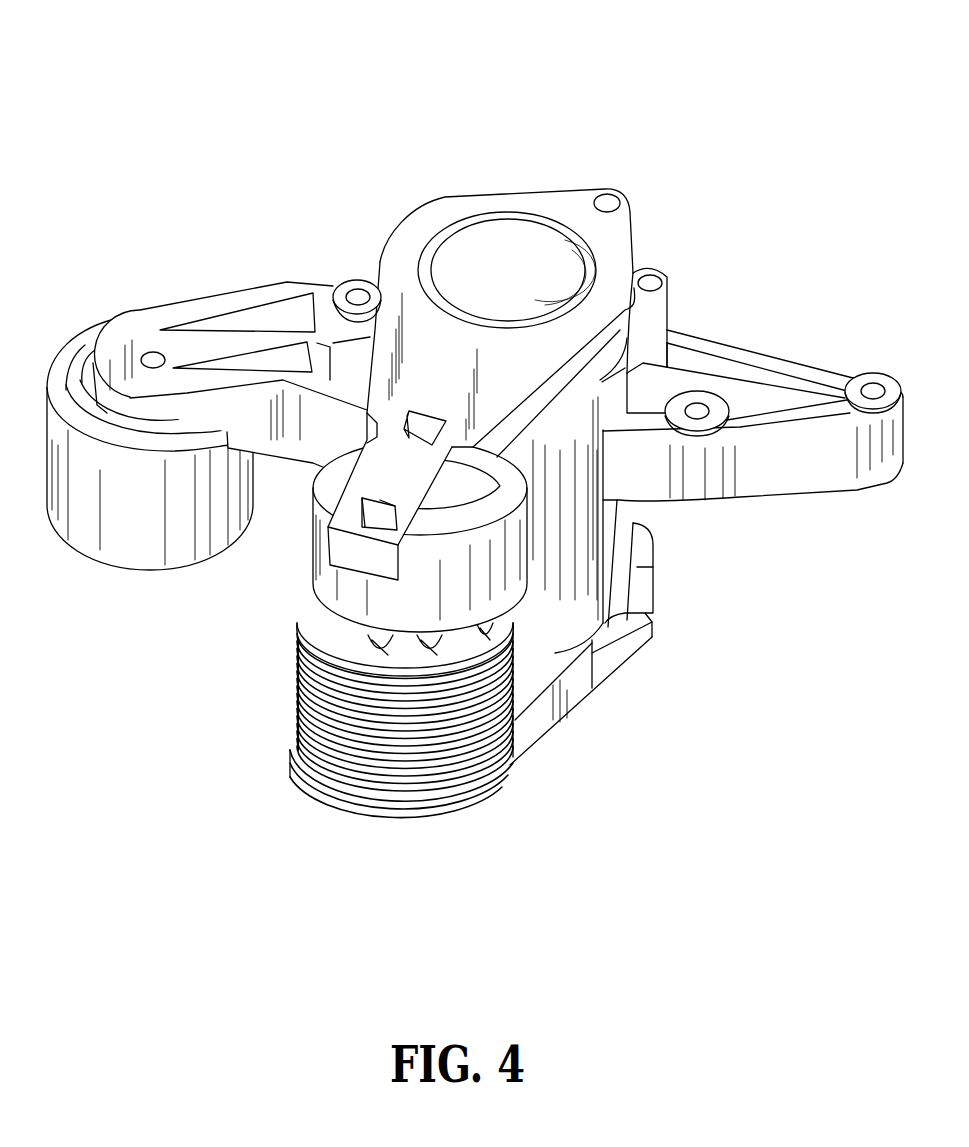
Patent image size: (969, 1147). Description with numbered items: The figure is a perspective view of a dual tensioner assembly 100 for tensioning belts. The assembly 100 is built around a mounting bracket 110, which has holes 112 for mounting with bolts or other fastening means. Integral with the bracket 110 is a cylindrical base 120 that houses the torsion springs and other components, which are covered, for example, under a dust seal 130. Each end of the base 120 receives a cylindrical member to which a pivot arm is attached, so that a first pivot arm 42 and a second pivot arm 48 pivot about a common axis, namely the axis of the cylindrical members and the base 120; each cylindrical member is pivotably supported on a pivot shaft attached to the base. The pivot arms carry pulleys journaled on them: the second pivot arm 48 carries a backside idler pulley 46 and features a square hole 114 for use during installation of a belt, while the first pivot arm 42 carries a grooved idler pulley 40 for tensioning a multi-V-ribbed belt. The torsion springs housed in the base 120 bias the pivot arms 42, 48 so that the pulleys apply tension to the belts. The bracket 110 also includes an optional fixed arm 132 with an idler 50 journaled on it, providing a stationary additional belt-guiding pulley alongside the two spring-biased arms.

The dual tensioner assembly 100 is at (687, 113).
The grooved idler pulley 40 is at (295, 690).
The first pivot arm 42 is at (537, 673).
The backside idler pulley 46 is at (367, 520).
The second pivot arm 48 is at (421, 371).
The idler 50 is at (98, 530).
The mounting bracket 110 is at (760, 357).
The holes 112 is at (360, 293).
The square hole 114 is at (320, 552).
The cylindrical base 120 is at (650, 335).
The dust seal 130 is at (470, 235).
The fixed arm 132 is at (140, 333).